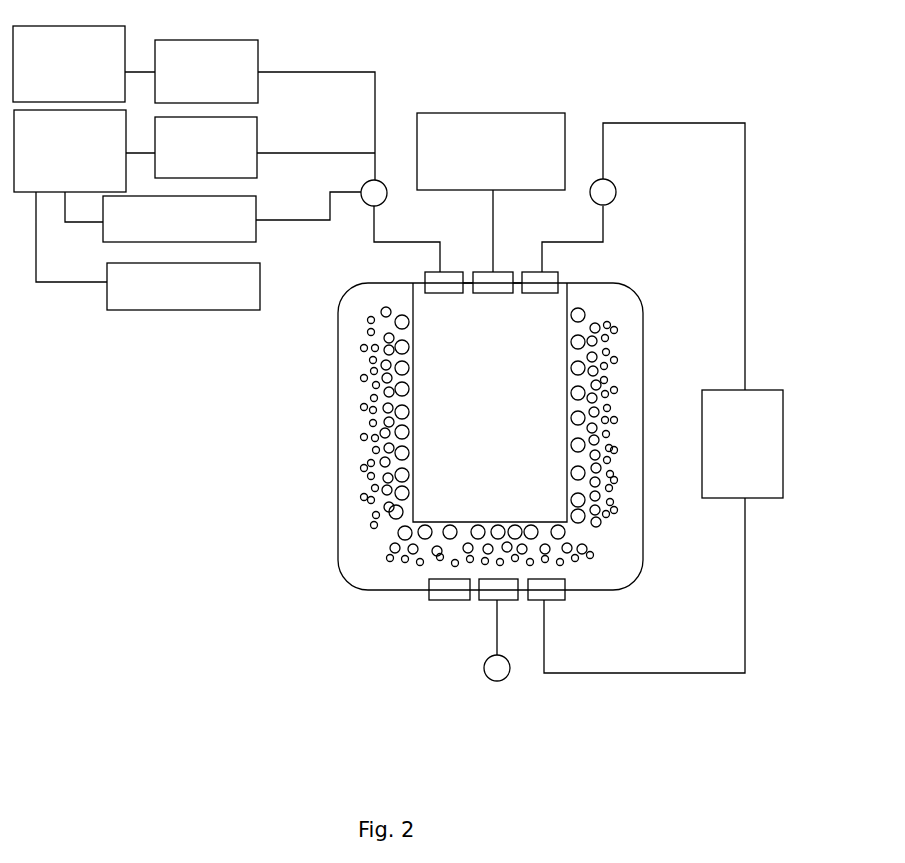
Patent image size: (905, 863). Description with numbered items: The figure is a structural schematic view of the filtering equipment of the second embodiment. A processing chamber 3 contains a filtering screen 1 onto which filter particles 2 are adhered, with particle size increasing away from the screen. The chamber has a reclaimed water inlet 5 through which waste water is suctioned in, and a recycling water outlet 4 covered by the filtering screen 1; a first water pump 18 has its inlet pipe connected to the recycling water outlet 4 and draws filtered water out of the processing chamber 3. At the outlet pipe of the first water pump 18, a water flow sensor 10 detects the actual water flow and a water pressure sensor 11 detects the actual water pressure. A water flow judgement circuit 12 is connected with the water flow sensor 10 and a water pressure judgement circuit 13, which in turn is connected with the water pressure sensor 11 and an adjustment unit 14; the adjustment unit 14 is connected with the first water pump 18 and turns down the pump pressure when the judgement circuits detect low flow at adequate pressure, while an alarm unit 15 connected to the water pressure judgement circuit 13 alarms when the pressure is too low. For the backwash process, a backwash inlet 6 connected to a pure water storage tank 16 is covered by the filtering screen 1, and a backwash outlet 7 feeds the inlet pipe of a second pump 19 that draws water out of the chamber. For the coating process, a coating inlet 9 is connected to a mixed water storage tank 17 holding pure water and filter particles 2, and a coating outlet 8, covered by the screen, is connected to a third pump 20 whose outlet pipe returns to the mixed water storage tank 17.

The filtering screen 1 is at (569, 332).
The filter particles 2 is at (612, 374).
The processing chamber 3 is at (652, 417).
The recycling water outlet 4 is at (456, 271).
The reclaimed water inlet 5 is at (463, 602).
The backwash inlet 6 is at (503, 271).
The backwash outlet 7 is at (509, 602).
The coating outlet 8 is at (549, 277).
The coating inlet 9 is at (562, 602).
The water flow sensor 10 is at (258, 50).
The water pressure sensor 11 is at (257, 128).
The water flow judgement circuit 12 is at (116, 50).
The water pressure judgement circuit 13 is at (118, 134).
The adjustment unit 14 is at (256, 206).
The alarm unit 15 is at (260, 272).
The pure water storage tank 16 is at (565, 128).
The mixed water storage tank 17 is at (760, 390).
The first water pump 18 is at (367, 208).
The second pump 19 is at (482, 675).
The third pump 20 is at (620, 196).